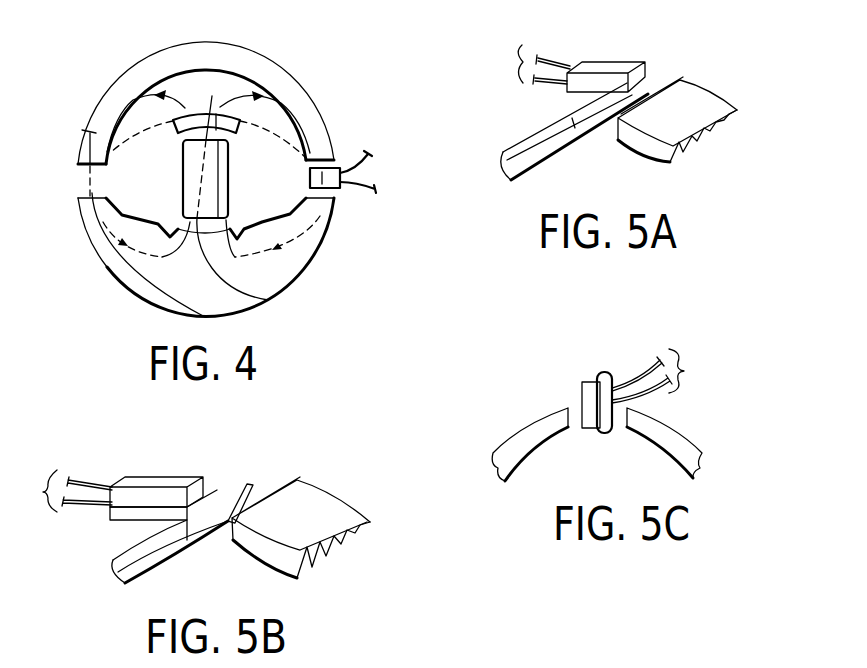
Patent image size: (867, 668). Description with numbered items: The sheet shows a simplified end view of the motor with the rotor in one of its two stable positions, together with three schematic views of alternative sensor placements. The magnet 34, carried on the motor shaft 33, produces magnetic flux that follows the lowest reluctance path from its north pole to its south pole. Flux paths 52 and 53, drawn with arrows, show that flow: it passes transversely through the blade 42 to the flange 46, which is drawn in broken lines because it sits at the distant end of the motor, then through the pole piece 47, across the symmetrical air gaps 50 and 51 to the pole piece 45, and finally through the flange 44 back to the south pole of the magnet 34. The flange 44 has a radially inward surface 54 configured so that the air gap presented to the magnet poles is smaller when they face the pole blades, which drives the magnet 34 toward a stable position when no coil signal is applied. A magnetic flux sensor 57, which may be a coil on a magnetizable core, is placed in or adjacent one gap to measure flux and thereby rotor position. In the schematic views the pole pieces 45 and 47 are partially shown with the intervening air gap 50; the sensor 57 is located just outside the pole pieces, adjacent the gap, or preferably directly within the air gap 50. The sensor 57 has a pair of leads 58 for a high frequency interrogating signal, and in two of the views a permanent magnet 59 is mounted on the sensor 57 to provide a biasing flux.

In FIG. 4, the motor shaft 33 is at (212, 182).
In FIG. 4, the magnet 34 is at (268, 300).
In FIG. 4, the blade 42 is at (212, 96).
In FIG. 4, the flange 44 is at (293, 267).
In FIG. 4, the pole piece 45 is at (320, 247).
In FIG. 5A, the pole piece 45 is at (688, 92).
In FIG. 5B, the pole piece 45 is at (307, 507).
In FIG. 5C, the pole piece 45 is at (675, 440).
In FIG. 4, the flange 46 is at (193, 85).
In FIG. 4, the pole piece 47 is at (271, 62).
In FIG. 5A, the pole piece 47 is at (533, 152).
In FIG. 5B, the pole piece 47 is at (147, 550).
In FIG. 5C, the pole piece 47 is at (518, 451).
In FIG. 4, the air gap 50 is at (341, 166).
In FIG. 5A, the air gap 50 is at (601, 130).
In FIG. 5B, the air gap 50 is at (222, 535).
In FIG. 5C, the air gap 50 is at (616, 440).
In FIG. 4, the air gap 51 is at (78, 181).
In FIG. 4, the flux path 52 is at (80, 131).
In FIG. 4, the flux path 53 is at (297, 113).
In FIG. 4, the radially inward surface 54 is at (327, 222).
In FIG. 4, the magnetic flux sensor 57 is at (342, 192).
In FIG. 5A, the magnetic flux sensor 57 is at (607, 63).
In FIG. 5B, the magnetic flux sensor 57 is at (158, 481).
In FIG. 5C, the magnetic flux sensor 57 is at (609, 380).
In FIG. 5A, the leads 58 is at (520, 62).
In FIG. 5B, the leads 58 is at (43, 492).
In FIG. 5C, the leads 58 is at (665, 375).
In FIG. 5B, the permanent magnet 59 is at (122, 516).
In FIG. 5C, the permanent magnet 59 is at (582, 394).